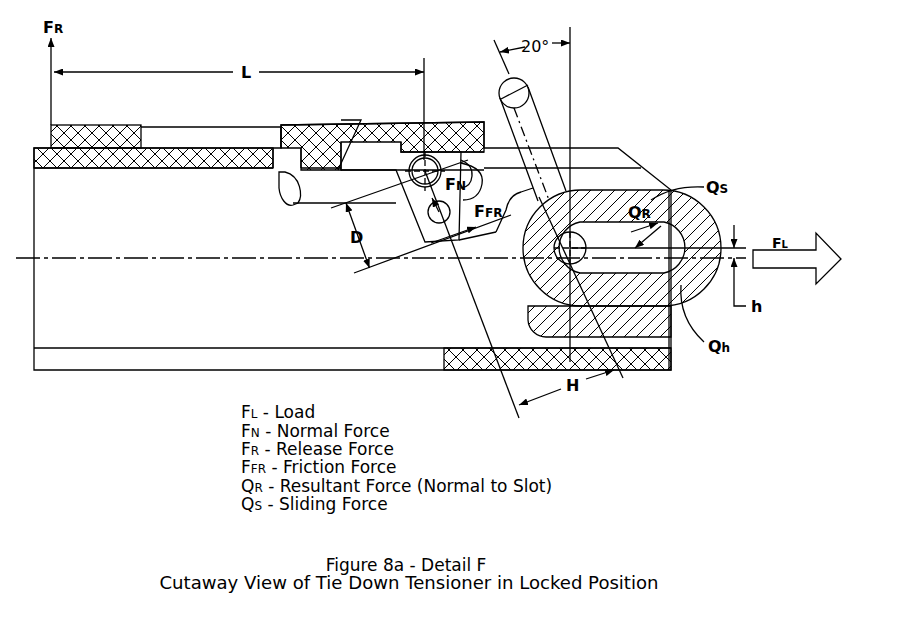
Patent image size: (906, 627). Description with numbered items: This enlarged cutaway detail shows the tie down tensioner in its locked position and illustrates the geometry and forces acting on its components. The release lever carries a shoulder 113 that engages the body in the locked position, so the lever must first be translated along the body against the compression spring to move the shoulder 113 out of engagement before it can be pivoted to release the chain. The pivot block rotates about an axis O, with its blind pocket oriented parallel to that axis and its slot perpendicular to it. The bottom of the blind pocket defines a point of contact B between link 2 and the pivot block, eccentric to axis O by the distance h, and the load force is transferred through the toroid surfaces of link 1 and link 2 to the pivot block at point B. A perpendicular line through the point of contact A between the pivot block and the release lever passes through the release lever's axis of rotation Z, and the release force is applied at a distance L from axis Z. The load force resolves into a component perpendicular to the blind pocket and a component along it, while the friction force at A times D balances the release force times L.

The shoulder 113 is at (293, 204).
The point of contact between pivot block and release lever A is at (530, 306).
The point of contact between link 2 and the pivot block B is at (590, 222).
The axis of rotation of the pivot block O is at (527, 294).
The axis of rotation of the release lever Z is at (412, 178).
The link 1 link1 is at (700, 293).
The link 2 link2 is at (540, 118).